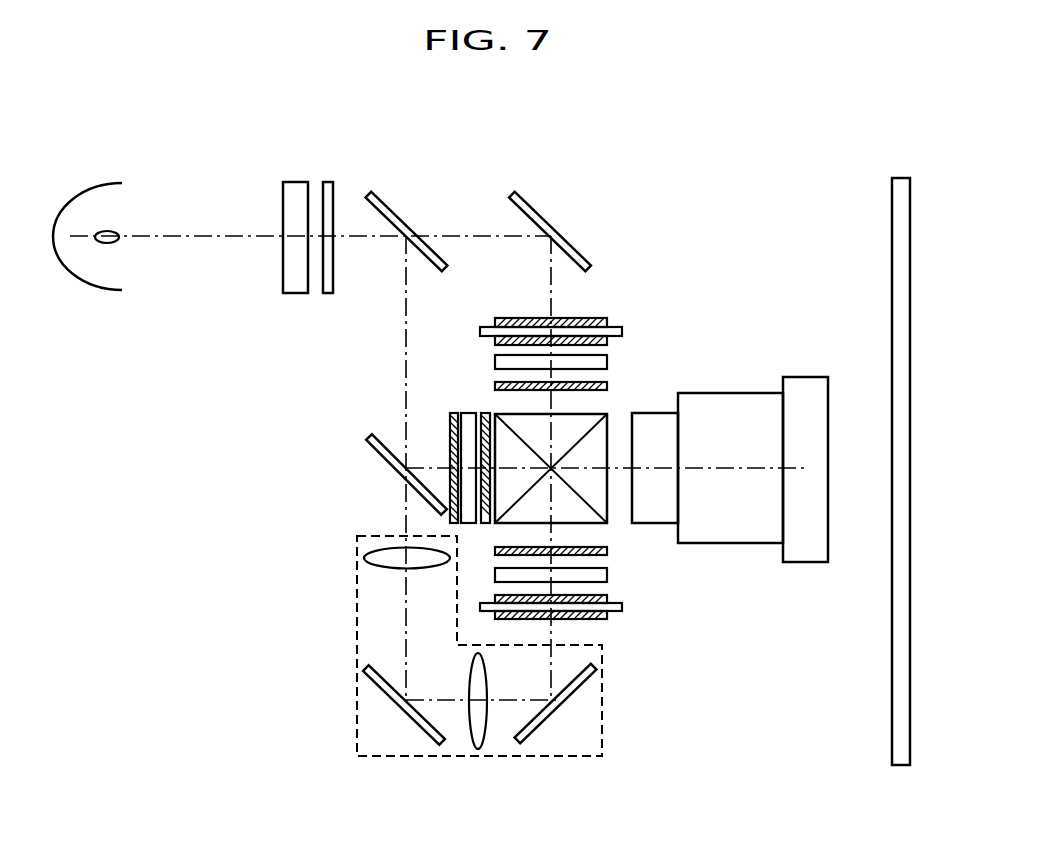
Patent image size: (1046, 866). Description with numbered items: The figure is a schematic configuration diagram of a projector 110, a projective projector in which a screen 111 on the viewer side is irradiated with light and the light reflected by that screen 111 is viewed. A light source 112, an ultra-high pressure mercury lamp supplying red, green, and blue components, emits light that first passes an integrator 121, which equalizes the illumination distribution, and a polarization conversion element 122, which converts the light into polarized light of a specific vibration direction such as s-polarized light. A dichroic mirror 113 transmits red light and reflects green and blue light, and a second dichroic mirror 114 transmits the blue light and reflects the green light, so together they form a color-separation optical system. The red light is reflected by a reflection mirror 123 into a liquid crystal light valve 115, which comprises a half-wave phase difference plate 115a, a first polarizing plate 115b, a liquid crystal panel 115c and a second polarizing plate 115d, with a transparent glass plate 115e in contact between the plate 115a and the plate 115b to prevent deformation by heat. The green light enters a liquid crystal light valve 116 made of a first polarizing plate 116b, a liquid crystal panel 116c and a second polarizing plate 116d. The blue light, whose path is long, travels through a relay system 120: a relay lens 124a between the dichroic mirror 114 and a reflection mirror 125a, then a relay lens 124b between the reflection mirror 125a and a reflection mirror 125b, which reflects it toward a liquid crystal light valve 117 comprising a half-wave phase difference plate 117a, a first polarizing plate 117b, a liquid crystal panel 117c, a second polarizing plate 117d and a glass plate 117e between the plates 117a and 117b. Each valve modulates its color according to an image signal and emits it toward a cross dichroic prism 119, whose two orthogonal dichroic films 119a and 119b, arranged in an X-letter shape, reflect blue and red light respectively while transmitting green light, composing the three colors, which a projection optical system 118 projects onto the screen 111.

The projector 110 is at (645, 188).
The screen 111 is at (898, 178).
The light source 112 is at (95, 183).
The dichroic mirror 113 is at (389, 208).
The dichroic mirror 114 is at (385, 458).
The liquid crystal light valve 115 is at (733, 243).
The λ/2 phase difference plate 115a is at (610, 320).
The first polarizing plate 115b is at (607, 340).
The liquid crystal panel 115c is at (607, 362).
The second polarizing plate 115d is at (607, 386).
The transparent glass plate 115e is at (622, 332).
The liquid crystal light valve 116 is at (324, 328).
The first polarizing plate 116b is at (452, 413).
The liquid crystal panel 116c is at (462, 413).
The second polarizing plate 116d is at (481, 414).
The liquid crystal light valve 117 is at (733, 553).
The λ/2 phase difference plate 117a is at (607, 617).
The first polarizing plate 117b is at (607, 599).
The liquid crystal panel 117c is at (607, 575).
The second polarizing plate 117d is at (607, 551).
The glass plate 117e is at (622, 607).
The projection optical system 118 is at (815, 553).
The cross dichroic prism 119 is at (600, 490).
The dichroic film 119a is at (590, 437).
The dichroic film 119b is at (507, 422).
The relay system 120 is at (562, 757).
The integrator 121 is at (297, 185).
The polarization conversion element 122 is at (330, 184).
The reflection mirror 123 is at (538, 208).
The relay lens 124a is at (365, 557).
The relay lens 124b is at (478, 746).
The reflection mirror 125a is at (415, 722).
The reflection mirror 125b is at (573, 693).